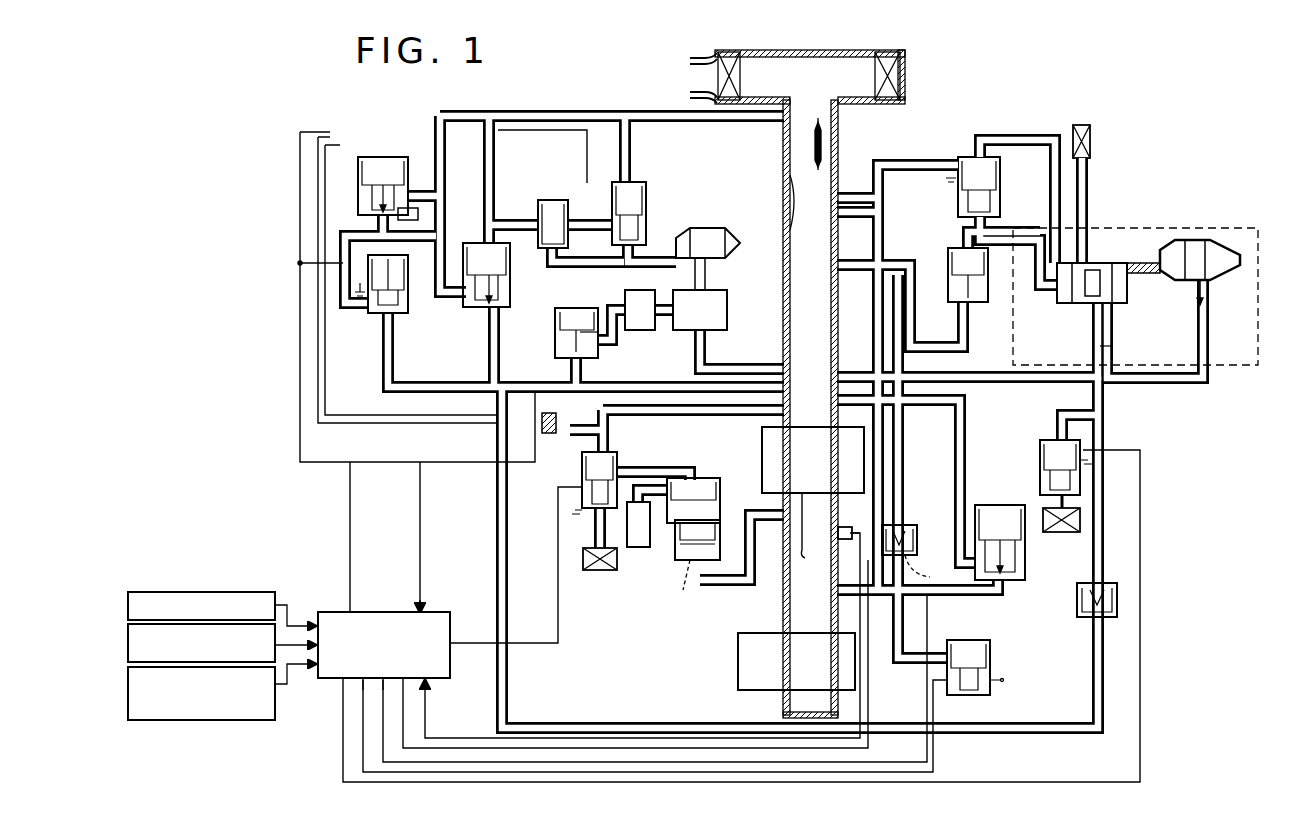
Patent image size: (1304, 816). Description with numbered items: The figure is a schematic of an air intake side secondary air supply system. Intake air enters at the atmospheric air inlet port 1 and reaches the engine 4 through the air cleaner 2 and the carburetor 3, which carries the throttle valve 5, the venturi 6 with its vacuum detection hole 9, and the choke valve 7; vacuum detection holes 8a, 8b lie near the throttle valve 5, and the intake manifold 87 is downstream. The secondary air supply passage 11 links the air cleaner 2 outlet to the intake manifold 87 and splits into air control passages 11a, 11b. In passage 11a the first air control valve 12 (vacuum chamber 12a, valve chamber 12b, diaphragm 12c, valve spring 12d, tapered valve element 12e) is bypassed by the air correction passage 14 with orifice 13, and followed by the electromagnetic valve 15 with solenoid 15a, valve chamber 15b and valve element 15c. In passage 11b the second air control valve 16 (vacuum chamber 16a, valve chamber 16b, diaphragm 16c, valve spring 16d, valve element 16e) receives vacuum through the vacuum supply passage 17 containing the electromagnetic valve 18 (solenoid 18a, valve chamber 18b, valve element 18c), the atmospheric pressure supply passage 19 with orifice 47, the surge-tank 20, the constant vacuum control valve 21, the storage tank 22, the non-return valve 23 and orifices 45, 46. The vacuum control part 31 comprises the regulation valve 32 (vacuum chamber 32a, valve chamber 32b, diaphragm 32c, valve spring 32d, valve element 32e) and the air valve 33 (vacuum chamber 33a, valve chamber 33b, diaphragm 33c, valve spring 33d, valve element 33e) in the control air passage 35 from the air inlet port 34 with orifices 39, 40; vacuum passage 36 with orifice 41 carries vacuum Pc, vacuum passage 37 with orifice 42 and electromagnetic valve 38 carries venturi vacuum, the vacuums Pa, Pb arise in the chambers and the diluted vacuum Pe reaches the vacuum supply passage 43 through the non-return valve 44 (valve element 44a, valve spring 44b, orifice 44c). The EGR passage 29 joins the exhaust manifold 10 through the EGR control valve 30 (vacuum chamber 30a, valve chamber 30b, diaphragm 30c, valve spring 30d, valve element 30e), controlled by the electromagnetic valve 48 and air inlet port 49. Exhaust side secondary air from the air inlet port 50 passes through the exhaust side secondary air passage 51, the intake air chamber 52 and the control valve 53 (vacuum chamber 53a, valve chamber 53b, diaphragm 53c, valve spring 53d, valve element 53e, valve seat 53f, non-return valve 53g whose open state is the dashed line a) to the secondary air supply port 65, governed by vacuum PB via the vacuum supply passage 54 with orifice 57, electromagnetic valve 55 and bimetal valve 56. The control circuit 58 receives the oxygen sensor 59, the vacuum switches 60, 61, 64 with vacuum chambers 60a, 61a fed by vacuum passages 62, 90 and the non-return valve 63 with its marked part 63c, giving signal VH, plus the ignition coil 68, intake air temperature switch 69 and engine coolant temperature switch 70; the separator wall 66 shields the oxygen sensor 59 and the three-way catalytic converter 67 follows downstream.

The atmospheric air inlet port 1 is at (693, 78).
The air cleaner 2 is at (732, 55).
The carburetor 3 is at (841, 228).
The engine 4 is at (760, 455).
The throttle valve 5 is at (825, 265).
The venturi 6 is at (793, 190).
The choke valve 7 is at (825, 146).
The vacuum detection hole 8a is at (839, 237).
The vacuum detection hole 8b is at (839, 220).
The vacuum detection hole 9 is at (835, 205).
The exhaust manifold 10 is at (782, 600).
The air intake side secondary air supply passage 11 is at (708, 171).
The air control passage 11a is at (412, 198).
The air control passage 11b is at (490, 360).
The first air control valve 12 is at (410, 175).
The vacuum chamber 12a is at (360, 170).
The valve chamber 12b is at (368, 200).
The diaphragm 12c is at (364, 185).
The valve spring 12d is at (386, 158).
The tapered valve element 12e is at (367, 223).
The orifice 13 is at (412, 219).
The air correction passage 14 is at (395, 236).
The electromagnetic valve 15 is at (378, 330).
The solenoid 15a is at (400, 268).
The valve chamber 15b is at (402, 300).
The valve element 15c is at (395, 316).
The second air control valve 16 is at (512, 283).
The vacuum chamber 16a is at (485, 230).
The valve chamber 16b is at (484, 312).
The diaphragm 16c is at (468, 278).
The valve spring 16d is at (485, 226).
The tapered valve element 16e is at (498, 315).
The vacuum supply passage 17 is at (636, 315).
The electromagnetic valve 18 is at (648, 182).
The solenoid 18a is at (645, 195).
The valve chamber 18b is at (645, 220).
The valve element 18c is at (614, 242).
The atmospheric pressure supply passage 19 is at (630, 150).
The surge-tank 20 is at (552, 200).
The constant vacuum control valve 21 is at (735, 228).
The storage tank 22 is at (728, 308).
The non-return valve 23 is at (648, 330).
The exhaust gas recirculation passage 29 is at (965, 403).
The EGR control valve 30 is at (1026, 578).
The vacuum chamber 30a is at (980, 505).
The valve chamber 30b is at (1026, 560).
The diaphragm 30c is at (1024, 538).
The valve spring 30d is at (1015, 514).
The valve element 30e is at (1006, 585).
The vacuum control part 31 is at (1222, 368).
The vacuum responsive regulation valve 32 is at (1108, 245).
The vacuum chamber 32a is at (1057, 280).
The valve chamber 32b is at (1075, 335).
The diaphragm 32c is at (1072, 303).
The valve spring 32d is at (1095, 262).
The valve element 32e is at (1115, 305).
The air valve 33 is at (1245, 290).
The vacuum chamber 33a is at (1238, 252).
The valve chamber 33b is at (1240, 265).
The diaphragm 33c is at (1192, 290).
The valve spring 33d is at (1200, 238).
The valve element 33e is at (1218, 280).
The air inlet port 34 is at (1092, 140).
The control air passage 35 is at (1208, 345).
The vacuum passage 36 is at (920, 258).
The vacuum passage 37 is at (1000, 200).
The electromagnetic valve 38 is at (1000, 170).
The orifice 39 is at (1060, 262).
The orifice 40 is at (1142, 262).
The orifice 41 is at (1115, 339).
The orifice 42 is at (1042, 300).
The vacuum supply passage 43 is at (1105, 497).
The non-return valve 44 is at (1072, 605).
The valve element 44a is at (1106, 618).
The valve spring 44b is at (1078, 592).
The orifice 44c is at (1090, 620).
The orifice 45 is at (590, 222).
The orifice 46 is at (622, 262).
The orifice / vacuum supply passage 47 is at (618, 162).
The electromagnetic valve 48 is at (1040, 446).
The atmospheric air inlet port 49 is at (1070, 535).
The atmospheric air inlet port 50 is at (600, 570).
The exhaust side secondary air passage 51 is at (740, 587).
The intake air chamber 52 is at (636, 548).
The exhaust side secondary air control valve 53 is at (665, 492).
The vacuum chamber 53a is at (705, 477).
The valve chamber 53b is at (676, 545).
The diaphragm 53c is at (668, 505).
The valve spring 53d is at (720, 498).
The valve element 53e is at (737, 530).
The valve seat 53f is at (735, 547).
The non-return valve 53g is at (737, 569).
The vacuum supply passage 54 is at (685, 416).
The electromagnetic valve 55 is at (580, 462).
The bimetal type temperature sensitive valve 56 is at (556, 415).
The orifice 57 is at (712, 415).
The control circuit 58 is at (432, 612).
The oxygen sensor 59 is at (852, 526).
The vacuum switch 60 is at (958, 306).
The vacuum chamber 60a is at (975, 262).
The vacuum switch 61 is at (990, 698).
The vacuum chamber 61a is at (980, 642).
The vacuum passage 62 is at (955, 260).
The non-return valve 63 is at (905, 525).
The port 63c is at (933, 570).
The vacuum switch 64 is at (570, 358).
The secondary air supply port 65 is at (785, 525).
The separator wall 66 is at (802, 552).
The three-way catalytic converter 67 is at (738, 675).
The ignition coil 68 is at (129, 596).
The intake air temperature switch 69 is at (126, 644).
The engine coolant temperature switch 70 is at (127, 708).
The intake manifold 87 is at (839, 345).
The vacuum passage 90 is at (888, 440).
The dashed line a is at (681, 584).
The high level voltage VH is at (806, 494).
The vacuum downstream of throttle valve PB is at (750, 363).
The vacuum in vacuum chamber 32a Pa is at (1137, 297).
The vacuum in valve chamber 33b Pb is at (1173, 289).
The vacuum from vacuum detection hole Pc is at (954, 466).
The diluted vacuum Pe is at (1144, 354).